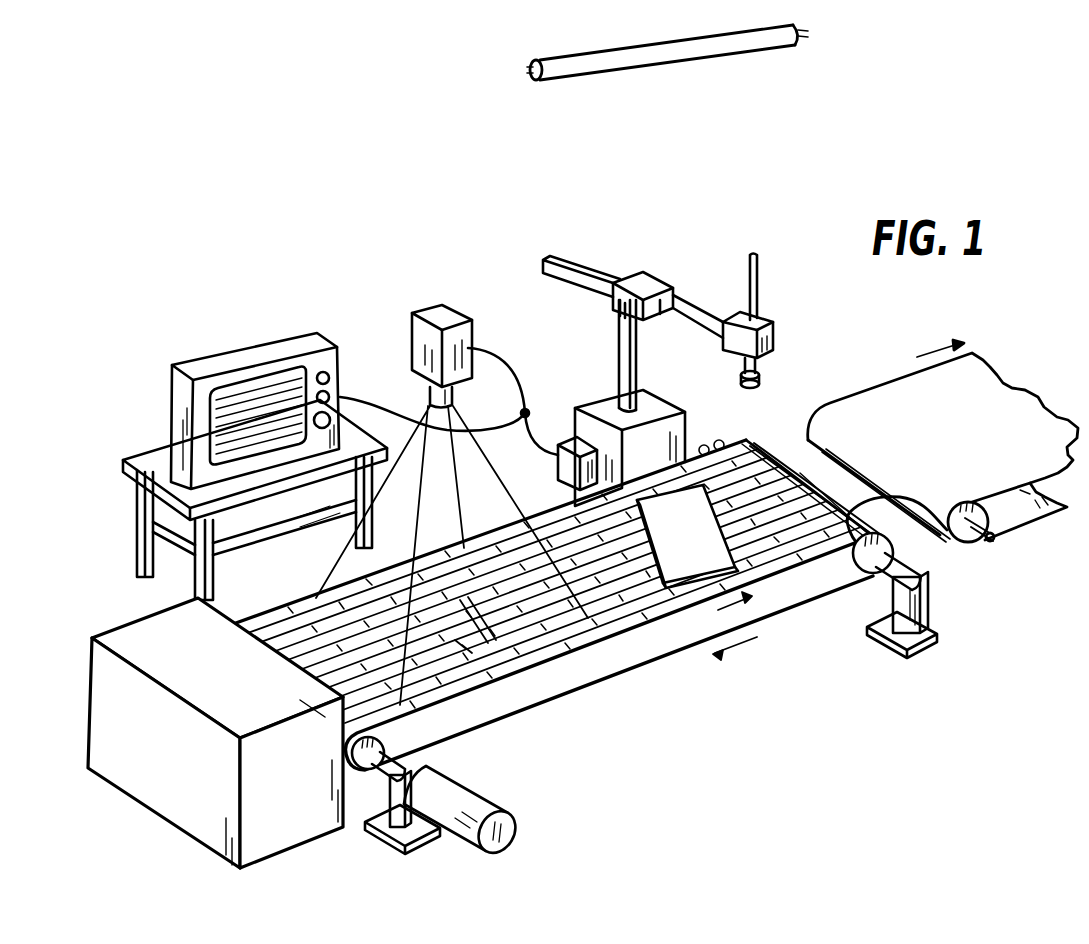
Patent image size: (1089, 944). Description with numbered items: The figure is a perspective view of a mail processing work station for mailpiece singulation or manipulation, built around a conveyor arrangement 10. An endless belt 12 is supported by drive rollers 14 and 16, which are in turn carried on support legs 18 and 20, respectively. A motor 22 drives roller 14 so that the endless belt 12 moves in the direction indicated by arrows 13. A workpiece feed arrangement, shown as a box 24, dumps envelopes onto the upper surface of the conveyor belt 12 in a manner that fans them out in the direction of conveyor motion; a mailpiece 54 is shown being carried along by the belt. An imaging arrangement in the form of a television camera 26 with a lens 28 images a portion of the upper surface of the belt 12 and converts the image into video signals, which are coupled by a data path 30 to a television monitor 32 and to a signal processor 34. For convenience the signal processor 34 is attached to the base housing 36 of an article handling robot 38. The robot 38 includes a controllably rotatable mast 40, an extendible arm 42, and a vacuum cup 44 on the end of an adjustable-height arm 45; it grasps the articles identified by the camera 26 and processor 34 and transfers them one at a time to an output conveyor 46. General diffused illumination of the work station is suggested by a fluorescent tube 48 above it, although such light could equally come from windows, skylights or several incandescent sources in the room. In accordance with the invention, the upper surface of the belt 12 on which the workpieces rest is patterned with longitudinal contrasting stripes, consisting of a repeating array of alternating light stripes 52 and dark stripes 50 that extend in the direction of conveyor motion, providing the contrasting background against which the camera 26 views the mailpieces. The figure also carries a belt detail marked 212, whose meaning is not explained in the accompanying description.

The conveyor arrangement 10 is at (608, 730).
The endless belt 12 is at (272, 622).
The arrows 13 is at (752, 598).
The drive roller 14 is at (380, 737).
The drive roller 16 is at (852, 578).
The support leg 18 is at (380, 840).
The support leg 20 is at (888, 640).
The motor 22 is at (508, 800).
The workpiece feed arrangement 24 is at (128, 628).
The television camera 26 is at (438, 308).
The lens 28 is at (425, 395).
The data path 30 is at (518, 380).
The television monitor 32 is at (282, 340).
The signal processor 34 is at (558, 468).
The robot base 36 is at (591, 406).
The article handling robot 38 is at (681, 214).
The controllably rotatable mast 40 is at (640, 352).
The extendible arm 42 is at (698, 308).
The vacuum cup 44 is at (763, 380).
The adjustable-height arm 45 is at (758, 276).
The output conveyor 46 is at (1008, 403).
The fluorescent tube 48 is at (655, 58).
The dark stripes 50 is at (760, 453).
The light stripes 52 is at (808, 440).
The mailpiece 54 is at (688, 575).
The belt slat 212 is at (505, 575).